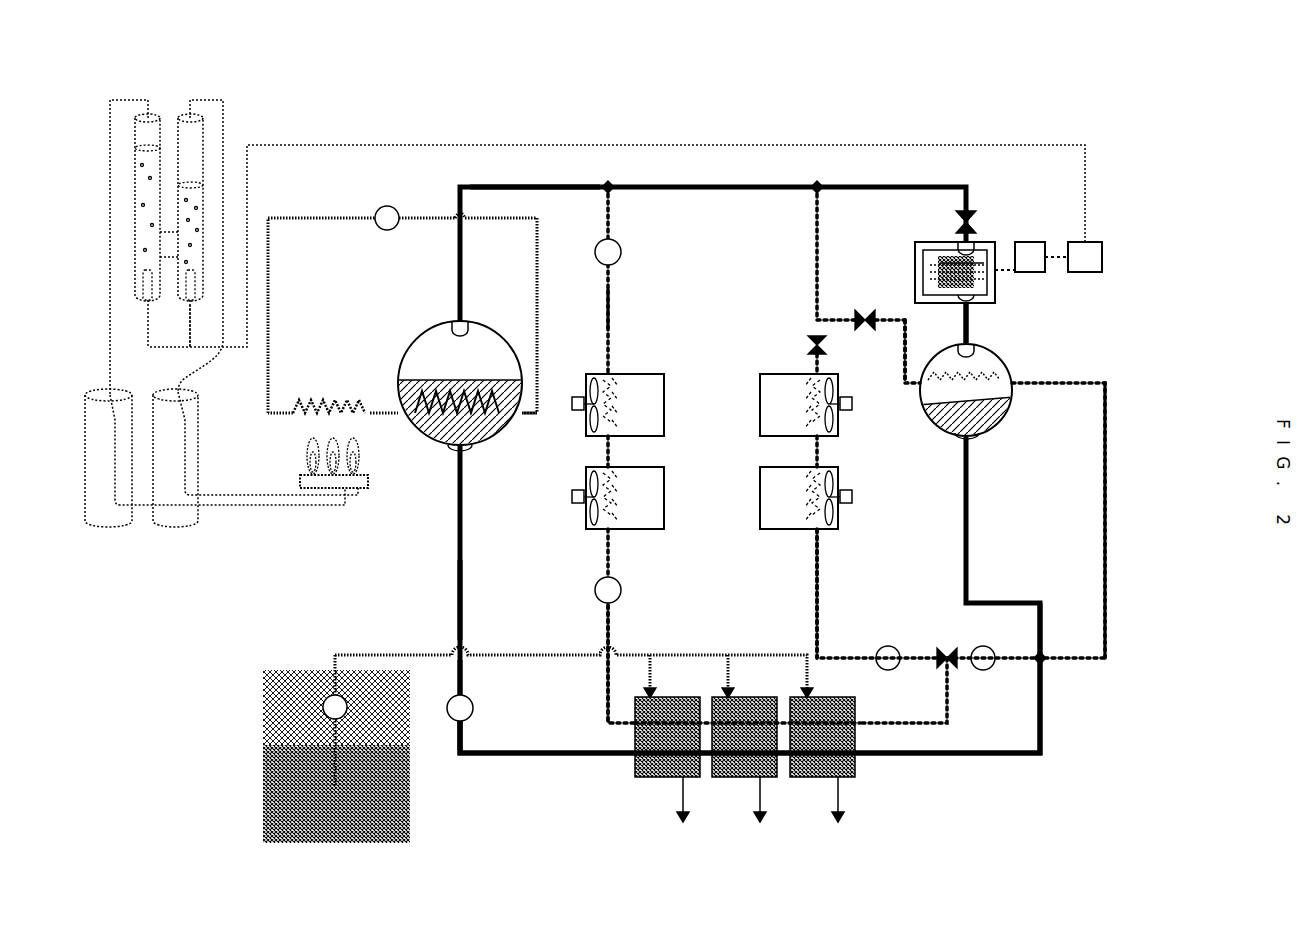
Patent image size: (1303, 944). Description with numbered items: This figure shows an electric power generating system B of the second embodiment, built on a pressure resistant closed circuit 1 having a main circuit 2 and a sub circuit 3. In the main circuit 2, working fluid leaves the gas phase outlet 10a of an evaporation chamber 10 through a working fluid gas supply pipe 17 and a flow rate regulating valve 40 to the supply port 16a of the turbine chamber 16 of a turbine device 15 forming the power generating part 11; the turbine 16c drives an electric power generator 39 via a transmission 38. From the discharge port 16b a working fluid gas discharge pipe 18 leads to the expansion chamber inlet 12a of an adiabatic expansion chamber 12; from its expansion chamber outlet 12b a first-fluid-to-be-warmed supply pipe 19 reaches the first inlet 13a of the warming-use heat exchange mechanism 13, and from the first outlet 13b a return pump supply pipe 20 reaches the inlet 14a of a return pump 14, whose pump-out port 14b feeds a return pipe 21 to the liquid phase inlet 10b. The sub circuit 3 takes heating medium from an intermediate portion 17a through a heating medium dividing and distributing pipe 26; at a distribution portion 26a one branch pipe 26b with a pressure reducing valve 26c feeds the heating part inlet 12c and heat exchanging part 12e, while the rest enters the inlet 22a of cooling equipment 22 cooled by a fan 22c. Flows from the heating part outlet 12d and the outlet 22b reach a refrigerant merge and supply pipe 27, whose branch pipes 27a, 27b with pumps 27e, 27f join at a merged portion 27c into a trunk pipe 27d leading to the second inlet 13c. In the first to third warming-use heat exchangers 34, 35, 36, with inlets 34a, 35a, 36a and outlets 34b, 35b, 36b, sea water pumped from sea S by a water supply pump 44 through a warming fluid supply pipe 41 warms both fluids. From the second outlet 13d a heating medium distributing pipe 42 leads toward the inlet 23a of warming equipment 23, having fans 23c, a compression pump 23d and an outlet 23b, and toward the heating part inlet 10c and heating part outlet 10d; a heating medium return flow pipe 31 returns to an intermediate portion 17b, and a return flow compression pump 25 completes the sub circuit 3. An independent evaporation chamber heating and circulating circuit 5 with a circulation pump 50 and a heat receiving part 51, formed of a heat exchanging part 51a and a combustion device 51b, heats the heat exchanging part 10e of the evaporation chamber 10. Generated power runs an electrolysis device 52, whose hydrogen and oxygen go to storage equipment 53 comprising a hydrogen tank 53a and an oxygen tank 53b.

The pressure resistant closed circuit 1 is at (900, 138).
The main circuit 2 is at (672, 183).
The sub circuit 3 is at (1112, 420).
The evaporation chamber heating and circulating circuit 5 is at (308, 208).
The evaporation chamber 10 is at (400, 346).
The gas phase outlet 10a is at (457, 322).
The liquid phase inlet 10b is at (450, 446).
The heating part inlet 10c is at (402, 406).
The heating part outlet 10d is at (518, 425).
The heat exchanging part 10e is at (460, 378).
The power generating part 11 is at (1020, 210).
The adiabatic expansion chamber 12 is at (1003, 353).
The expansion chamber inlet 12a is at (960, 346).
The expansion chamber outlet 12b is at (1000, 433).
The heating part inlet 12c is at (918, 386).
The heating part outlet 12d is at (1013, 383).
The heat exchanging part 12e is at (955, 405).
The warming-use heat exchange mechanism 13 is at (800, 845).
The first inlet 13a is at (856, 762).
The first outlet 13b is at (628, 760).
The second inlet 13c is at (860, 722).
The second outlet 13d is at (632, 732).
The return pump 14 is at (475, 708).
The inlet 14a is at (466, 720).
The pump-out port 14b is at (466, 698).
The turbine device 15 is at (940, 240).
The turbine chamber 16 is at (918, 250).
The supply port 16a is at (975, 249).
The discharge port 16b is at (975, 293).
The turbine 16c is at (935, 265).
The working fluid gas supply pipe 17 is at (510, 185).
The intermediate portion 17a is at (815, 185).
The intermediate portion 17b is at (607, 185).
The working fluid gas discharge pipe 18 is at (970, 326).
The first-fluid-to-be-warmed supply pipe 19 is at (1042, 740).
The return pump supply pipe 20 is at (490, 760).
The return pipe 21 is at (457, 601).
The cooling equipment 22 is at (762, 372).
The inlet 22a is at (832, 374).
The outlet 22b is at (822, 531).
The fan 22c is at (835, 431).
The warming equipment 23 is at (670, 378).
The inlet 23a is at (612, 531).
The outlet 23b is at (612, 373).
The fans 23c is at (586, 497).
The compression pump 23d is at (622, 591).
The return flow compression pump 25 is at (622, 253).
The heating medium dividing and distributing pipe 26 is at (815, 270).
The distribution portion 26a is at (812, 320).
The branch pipe 26b is at (901, 315).
The pressure reducing valve 26c is at (858, 312).
The refrigerant merge and supply pipe 27 is at (950, 713).
The branch pipe 27a is at (1107, 490).
The branch pipe 27b is at (814, 566).
The merged portion 27c is at (945, 650).
The trunk pipe 27d is at (991, 744).
The pump 27e is at (985, 644).
The pump 27f is at (888, 644).
The heating medium return flow pipe 31 is at (612, 311).
The first warming-use heat exchanger 34 is at (670, 690).
The inlet 34a is at (648, 690).
The outlet 34b is at (680, 790).
The second warming-use heat exchanger 35 is at (742, 690).
The inlet 35a is at (726, 690).
The outlet 35b is at (757, 790).
The third warming-use heat exchanger 36 is at (835, 694).
The inlet 36a is at (805, 690).
The outlet 36b is at (835, 790).
The transmission 38 is at (1040, 266).
The electric power generator 39 is at (1094, 266).
The flow rate regulating valve 40 is at (973, 215).
The warming fluid supply pipe 41 is at (548, 652).
The heating medium distributing pipe 42 is at (612, 625).
The water supply pump 44 is at (323, 700).
The circulation pump 50 is at (390, 205).
The heat receiving part 51 is at (290, 441).
The heat exchanging part 51a is at (315, 400).
The combustion device 51b is at (300, 481).
The electrolysis device 52 is at (213, 90).
The storage equipment 53 is at (140, 576).
The hydrogen tank 53a is at (182, 530).
The oxygen tank 53b is at (96, 530).
The electric power generating system B is at (1130, 120).
The sea S is at (300, 762).